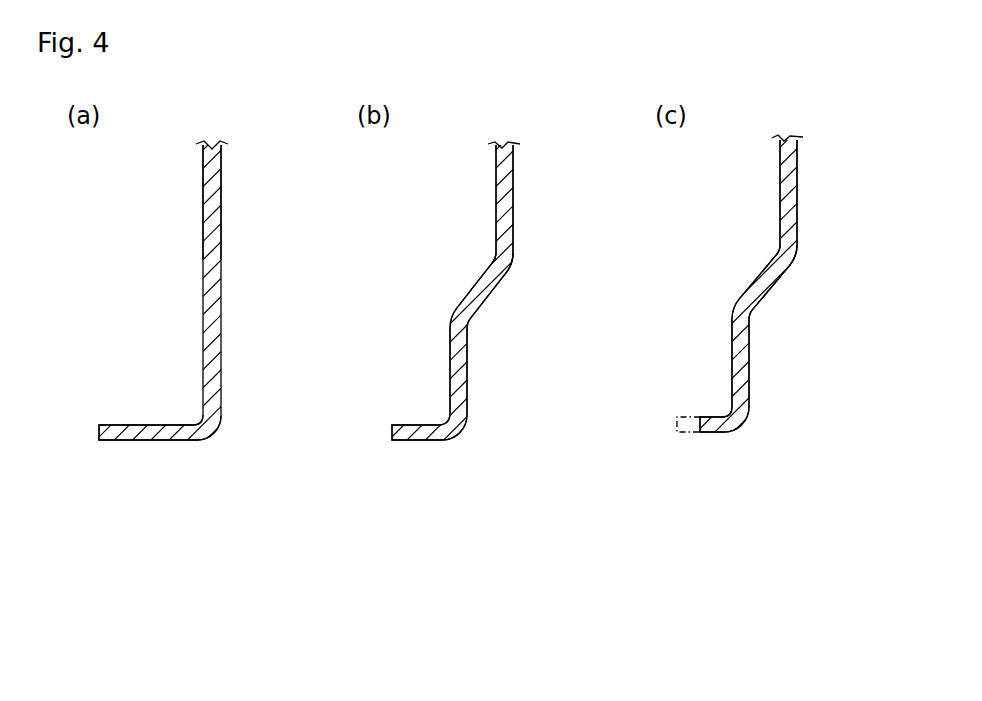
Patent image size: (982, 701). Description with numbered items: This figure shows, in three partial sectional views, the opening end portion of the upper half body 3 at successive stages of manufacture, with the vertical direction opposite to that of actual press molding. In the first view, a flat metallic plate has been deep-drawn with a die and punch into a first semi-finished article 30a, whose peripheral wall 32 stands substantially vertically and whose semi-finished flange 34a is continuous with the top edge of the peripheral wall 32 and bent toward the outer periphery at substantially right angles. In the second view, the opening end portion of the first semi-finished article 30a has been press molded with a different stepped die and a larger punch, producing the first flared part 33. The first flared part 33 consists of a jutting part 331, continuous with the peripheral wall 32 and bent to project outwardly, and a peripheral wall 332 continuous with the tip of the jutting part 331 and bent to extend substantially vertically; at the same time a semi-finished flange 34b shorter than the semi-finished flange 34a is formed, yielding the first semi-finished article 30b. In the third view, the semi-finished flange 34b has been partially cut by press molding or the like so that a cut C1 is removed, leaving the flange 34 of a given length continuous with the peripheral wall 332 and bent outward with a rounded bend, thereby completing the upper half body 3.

The upper half body 3 is at (822, 238).
The first semi-finished article 30a is at (232, 274).
The first semi-finished article 30b is at (520, 275).
The peripheral wall 32 is at (204, 207).
The first flared part 33 is at (446, 308).
The jutting part 331 is at (490, 288).
The peripheral wall 332 is at (456, 365).
The flange 34 is at (712, 433).
The semi-finished flange 34a is at (131, 440).
The semi-finished flange 34b is at (428, 440).
The cut C1 is at (677, 426).